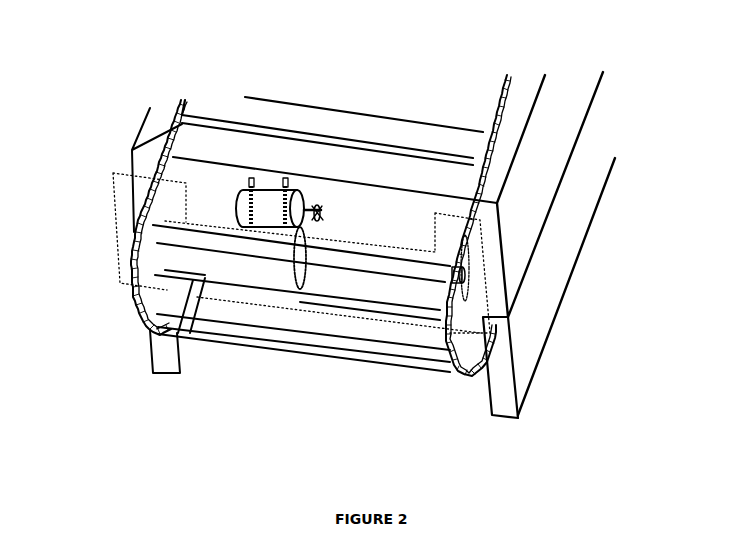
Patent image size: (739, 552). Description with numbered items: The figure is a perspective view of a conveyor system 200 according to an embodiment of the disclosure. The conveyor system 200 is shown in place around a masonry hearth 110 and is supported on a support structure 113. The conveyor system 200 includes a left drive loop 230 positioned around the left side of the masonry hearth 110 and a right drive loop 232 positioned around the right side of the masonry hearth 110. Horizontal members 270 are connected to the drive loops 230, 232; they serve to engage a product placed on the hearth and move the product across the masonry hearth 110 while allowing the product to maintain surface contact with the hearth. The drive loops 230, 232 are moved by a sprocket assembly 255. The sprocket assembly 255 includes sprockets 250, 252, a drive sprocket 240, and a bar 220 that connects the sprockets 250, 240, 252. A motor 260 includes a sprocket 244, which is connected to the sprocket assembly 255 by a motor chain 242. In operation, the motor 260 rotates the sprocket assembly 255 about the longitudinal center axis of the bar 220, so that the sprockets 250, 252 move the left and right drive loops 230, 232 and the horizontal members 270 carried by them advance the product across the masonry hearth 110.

The conveyor system 200 is at (98, 82).
The masonry hearth 110 is at (513, 248).
The support structure 113 is at (522, 370).
The bar 220 is at (228, 243).
The left drive loop 230 is at (140, 340).
The right drive loop 232 is at (466, 378).
The drive sprocket 240 is at (308, 268).
The motor chain 242 is at (298, 233).
The sprocket 244 is at (322, 216).
The sprocket 250 is at (162, 212).
The sprocket 252 is at (457, 295).
The sprocket assembly 255 is at (115, 197).
The motor 260 is at (260, 222).
The horizontal members 270 is at (388, 323).